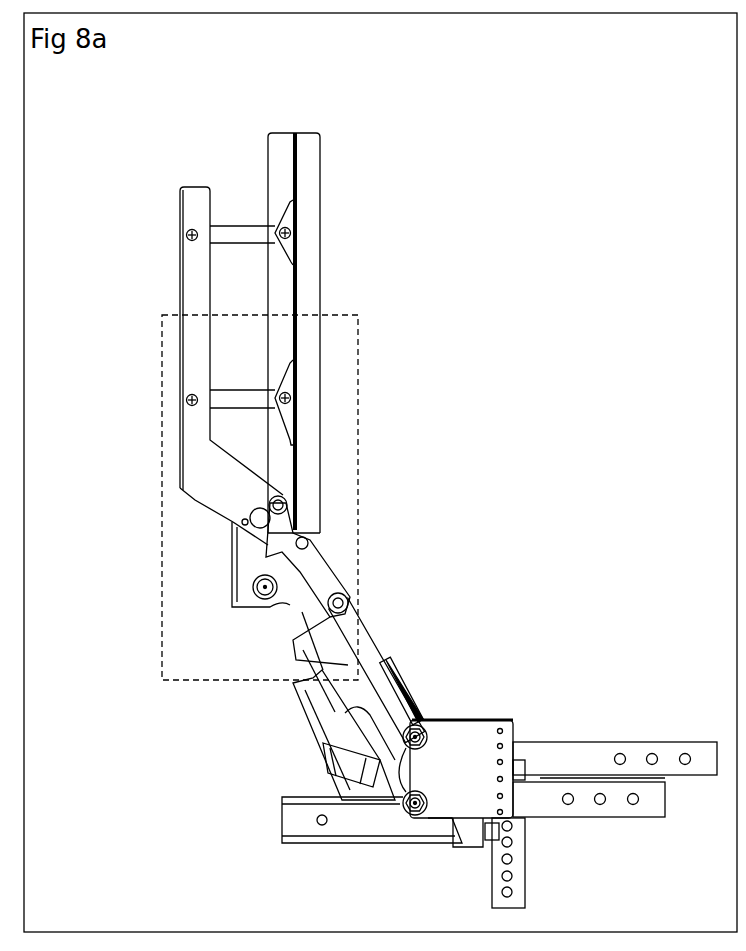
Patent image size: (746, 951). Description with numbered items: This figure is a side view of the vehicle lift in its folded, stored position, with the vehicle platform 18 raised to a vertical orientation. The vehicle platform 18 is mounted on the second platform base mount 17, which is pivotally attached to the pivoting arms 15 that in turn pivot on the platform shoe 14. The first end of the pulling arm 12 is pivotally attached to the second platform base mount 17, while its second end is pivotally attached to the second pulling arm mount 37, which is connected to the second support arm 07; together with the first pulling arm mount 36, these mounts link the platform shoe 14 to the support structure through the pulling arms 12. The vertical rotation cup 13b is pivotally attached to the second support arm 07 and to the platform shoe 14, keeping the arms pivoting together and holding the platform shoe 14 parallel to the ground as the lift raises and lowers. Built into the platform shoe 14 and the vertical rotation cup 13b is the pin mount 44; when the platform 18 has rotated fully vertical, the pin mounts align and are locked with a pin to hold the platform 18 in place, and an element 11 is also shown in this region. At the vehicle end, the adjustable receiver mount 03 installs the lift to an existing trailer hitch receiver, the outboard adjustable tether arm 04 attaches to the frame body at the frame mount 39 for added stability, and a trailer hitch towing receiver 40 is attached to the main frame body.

The platform shoe 14 is at (178, 230).
The pivoting arms 15 is at (242, 235).
The second platform base mount 17 is at (278, 178).
The vehicle platform 18 is at (313, 225).
The pin mount 44 is at (232, 520).
The vertical rotation cup 13b is at (250, 555).
The pulling arm 12 is at (297, 562).
The second pulling arm mount 37 is at (305, 643).
The first pulling arm mount 36 is at (358, 660).
The actuator body 11 is at (313, 697).
The second support arm 07 is at (372, 745).
The frame mount 39 is at (488, 745).
The adjustable receiver mount 03 is at (572, 750).
The outboard adjustable tether arm 04 is at (583, 808).
The trailer hitch towing receiver 40 is at (310, 820).